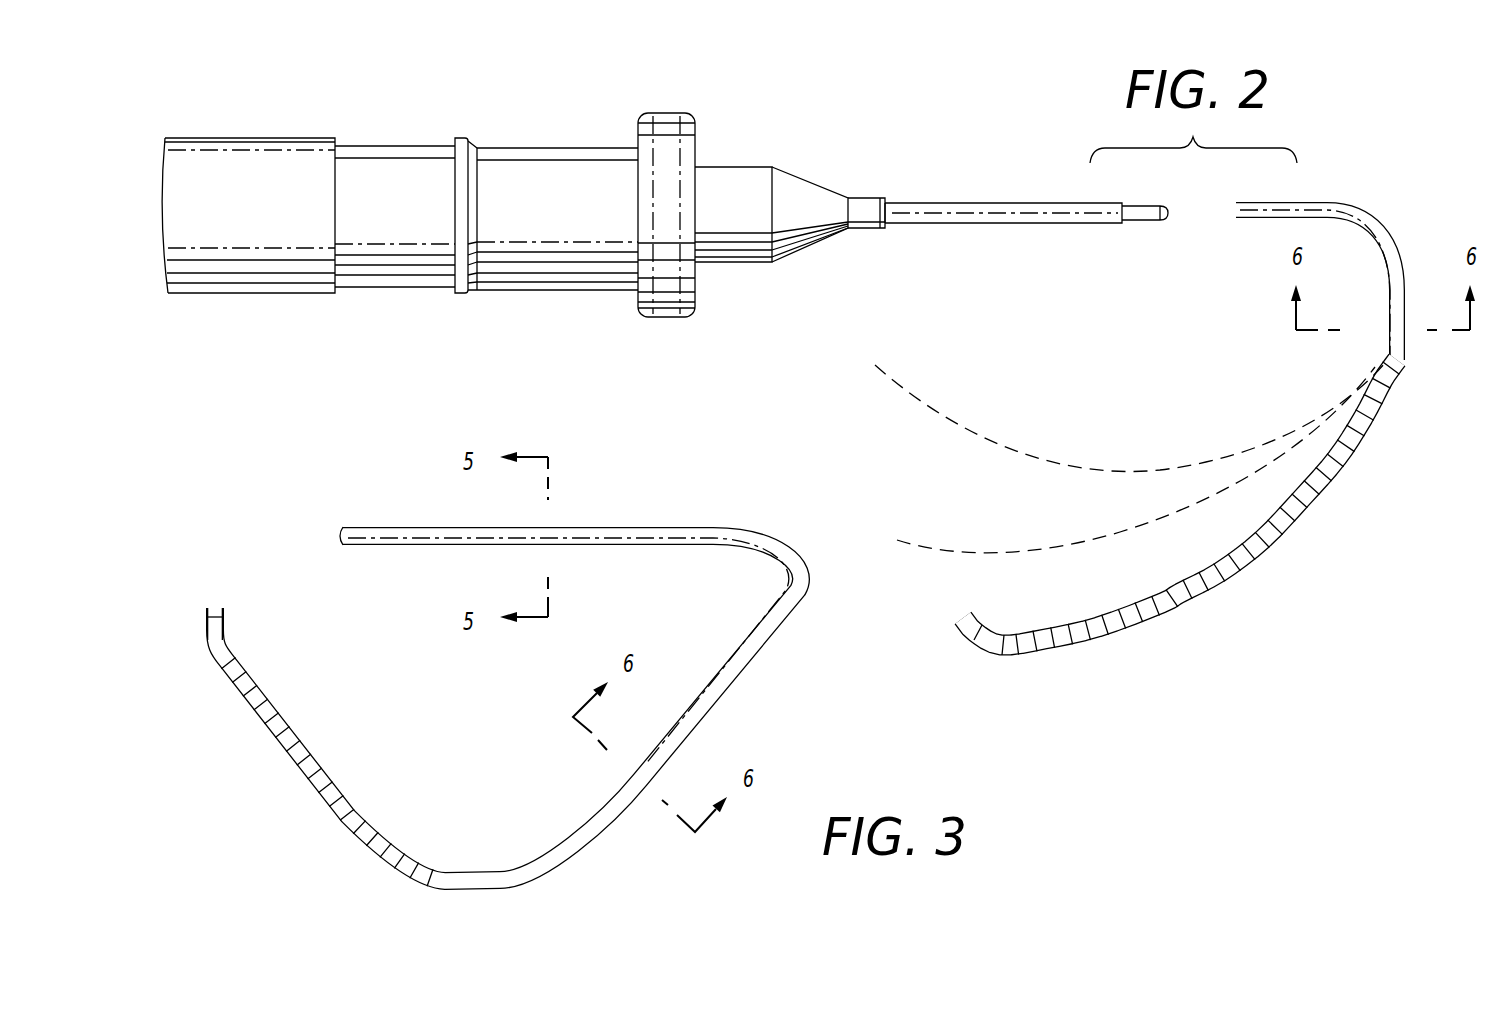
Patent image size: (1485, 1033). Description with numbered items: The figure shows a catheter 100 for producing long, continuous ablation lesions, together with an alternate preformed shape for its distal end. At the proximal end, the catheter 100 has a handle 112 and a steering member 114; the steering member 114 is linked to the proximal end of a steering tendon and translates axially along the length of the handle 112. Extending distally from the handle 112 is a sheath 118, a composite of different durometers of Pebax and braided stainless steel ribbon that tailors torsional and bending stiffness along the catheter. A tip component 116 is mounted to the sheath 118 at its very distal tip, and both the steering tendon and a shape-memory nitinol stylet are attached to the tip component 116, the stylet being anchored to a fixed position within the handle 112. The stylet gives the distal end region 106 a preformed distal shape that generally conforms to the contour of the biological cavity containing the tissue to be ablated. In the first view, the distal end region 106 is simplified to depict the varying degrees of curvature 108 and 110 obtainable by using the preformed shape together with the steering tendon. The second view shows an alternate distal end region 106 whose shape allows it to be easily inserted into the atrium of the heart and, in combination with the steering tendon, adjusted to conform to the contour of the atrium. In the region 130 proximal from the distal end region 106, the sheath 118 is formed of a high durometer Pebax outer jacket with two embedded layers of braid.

In FIG. 2, the catheter 100 is at (851, 149).
In FIG. 2, the distal end region 106 is at (1284, 586).
In FIG. 3, the distal end region 106 is at (635, 839).
In FIG. 2, the degree of curvature 108 is at (945, 548).
In FIG. 2, the degree of curvature 110 is at (960, 430).
In FIG. 2, the handle 112 is at (398, 132).
In FIG. 2, the steering member 114 is at (668, 113).
In FIG. 2, the tip component 116 is at (958, 620).
In FIG. 3, the tip component 116 is at (213, 599).
In FIG. 2, the sheath 118 is at (1040, 648).
In FIG. 3, the sheath 118 is at (213, 635).
In FIG. 3, the region proximal from the distal end region 130 is at (487, 624).